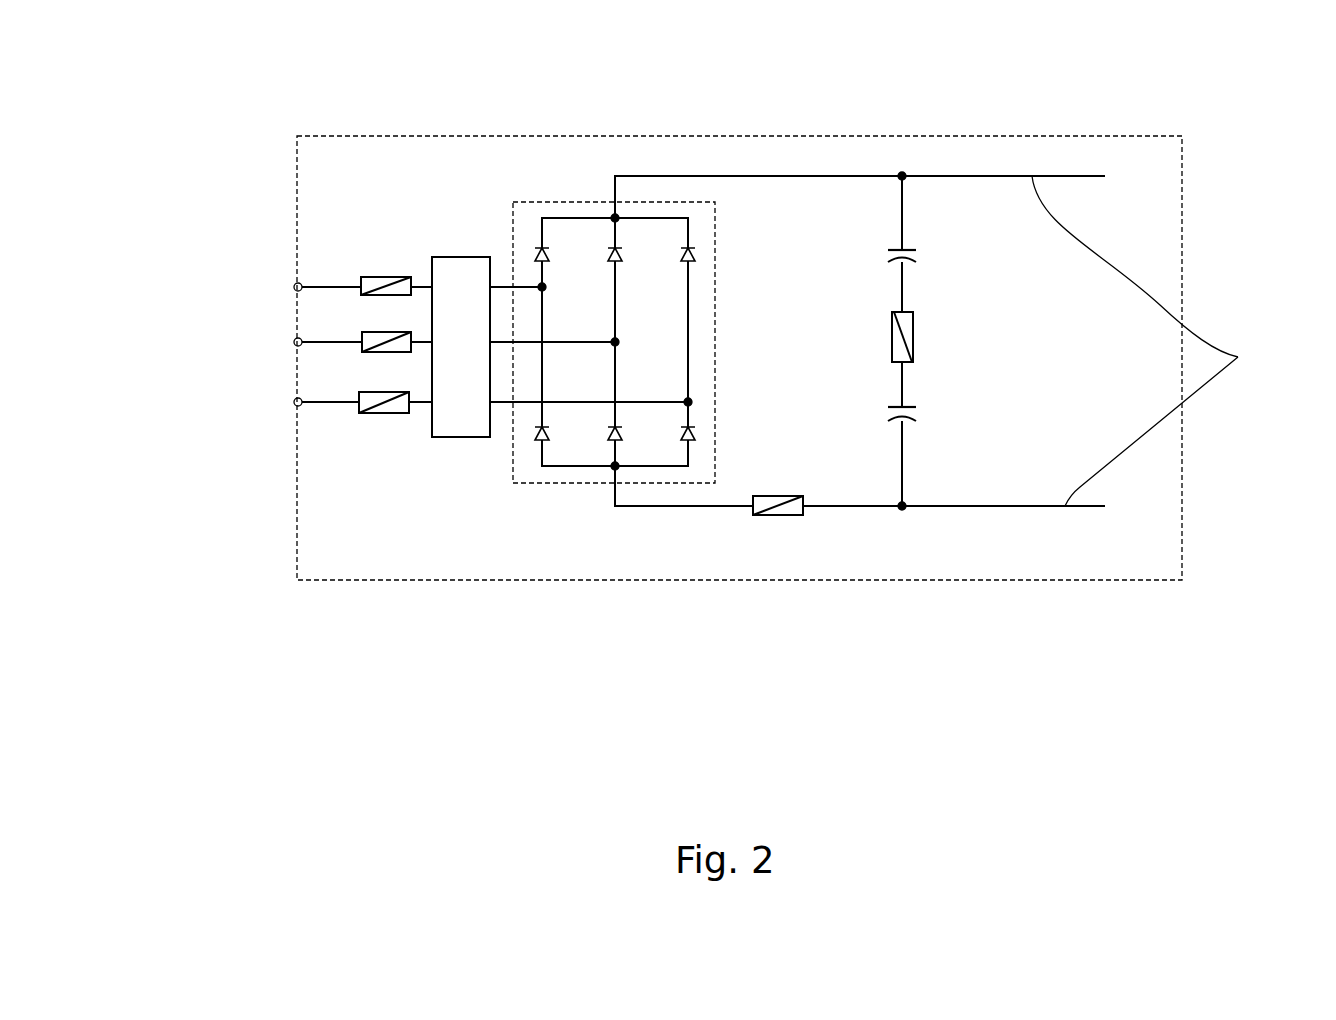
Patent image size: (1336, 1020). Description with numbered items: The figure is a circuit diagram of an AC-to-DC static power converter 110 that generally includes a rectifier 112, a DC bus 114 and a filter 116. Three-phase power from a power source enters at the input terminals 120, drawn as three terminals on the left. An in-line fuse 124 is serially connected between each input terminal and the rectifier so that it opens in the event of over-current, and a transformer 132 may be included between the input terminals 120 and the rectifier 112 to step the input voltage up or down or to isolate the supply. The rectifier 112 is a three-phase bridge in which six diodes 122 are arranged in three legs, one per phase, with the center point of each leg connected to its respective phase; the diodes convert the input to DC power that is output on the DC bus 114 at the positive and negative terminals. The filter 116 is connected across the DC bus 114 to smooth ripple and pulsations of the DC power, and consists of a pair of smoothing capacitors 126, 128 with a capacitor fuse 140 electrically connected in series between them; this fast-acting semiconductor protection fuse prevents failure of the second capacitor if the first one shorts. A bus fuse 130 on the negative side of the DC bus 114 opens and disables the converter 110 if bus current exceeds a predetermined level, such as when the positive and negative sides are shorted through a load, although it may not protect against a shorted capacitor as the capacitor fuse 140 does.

The AC-to-DC static power converter 110 is at (1042, 117).
The rectifier 112 is at (719, 373).
The DC bus 114 is at (1161, 341).
The filter 116 is at (840, 255).
The input terminals 120 is at (232, 347).
The diodes 122 is at (613, 450).
The in-line fuse 124 is at (368, 393).
The smoothing capacitor 126 is at (845, 256).
The smoothing capacitor 128 is at (833, 420).
The bus fuse 130 is at (765, 518).
The transformer 132 is at (452, 280).
The capacitor fuse 140 is at (905, 318).